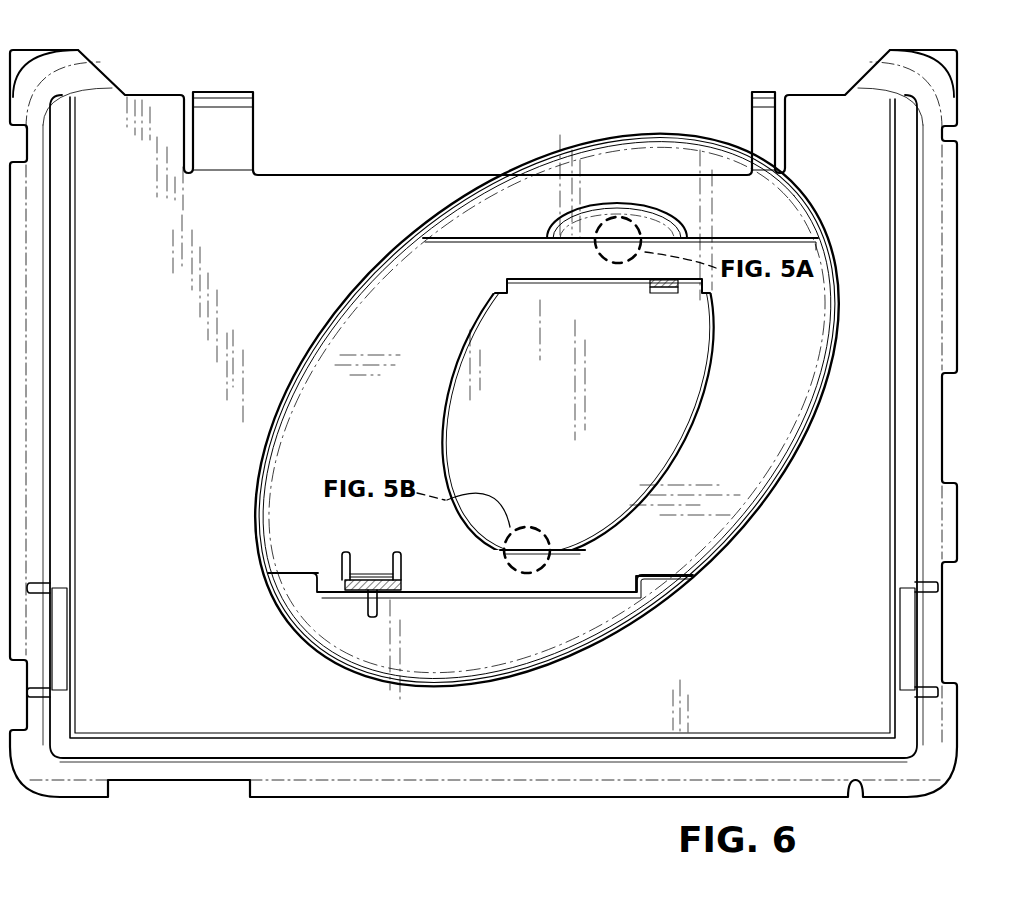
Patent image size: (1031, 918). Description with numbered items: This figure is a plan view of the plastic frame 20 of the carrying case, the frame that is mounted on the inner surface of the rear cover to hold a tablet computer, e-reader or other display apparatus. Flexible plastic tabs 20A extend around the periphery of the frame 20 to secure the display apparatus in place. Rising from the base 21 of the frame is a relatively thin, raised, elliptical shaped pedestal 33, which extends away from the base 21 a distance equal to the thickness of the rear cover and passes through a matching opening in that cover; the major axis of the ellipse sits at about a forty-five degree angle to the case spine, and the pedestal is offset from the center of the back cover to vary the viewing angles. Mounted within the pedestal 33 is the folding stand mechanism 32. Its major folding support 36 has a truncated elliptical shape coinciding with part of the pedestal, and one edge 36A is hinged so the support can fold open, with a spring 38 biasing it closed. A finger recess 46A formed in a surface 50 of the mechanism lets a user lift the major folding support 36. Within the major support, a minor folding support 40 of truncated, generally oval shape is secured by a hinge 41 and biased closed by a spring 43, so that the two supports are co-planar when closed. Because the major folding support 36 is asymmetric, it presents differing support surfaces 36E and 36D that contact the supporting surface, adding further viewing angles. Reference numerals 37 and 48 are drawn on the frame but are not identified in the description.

The plastic frame 20 is at (352, 100).
The flexible plastic tabs 20A is at (958, 305).
The base 21 is at (171, 391).
The folding stand mechanism 32 is at (358, 253).
The pedestal 33 is at (322, 330).
The major folding support 36 is at (404, 423).
The edge of major folding support 36A is at (490, 590).
The support surface 36D is at (808, 398).
The support surface 36E is at (358, 298).
The flange step 37 is at (328, 580).
The spring 38 is at (372, 572).
The minor folding support 40 is at (617, 433).
The hinge 41 is at (558, 279).
The spring 43 is at (664, 295).
The finger recess 46A is at (593, 223).
The lower region 48 is at (484, 645).
The surface 50 is at (655, 188).